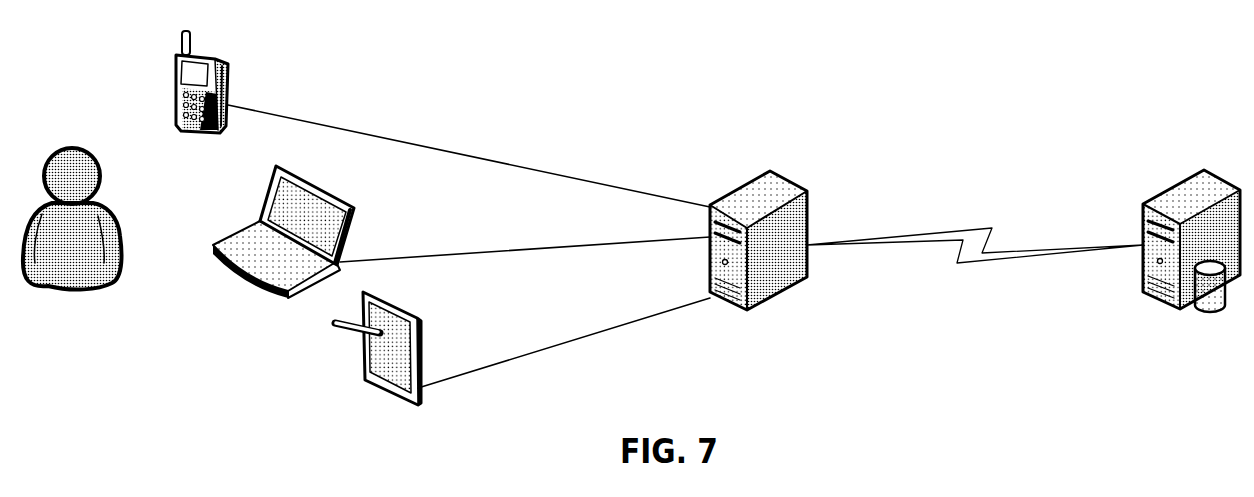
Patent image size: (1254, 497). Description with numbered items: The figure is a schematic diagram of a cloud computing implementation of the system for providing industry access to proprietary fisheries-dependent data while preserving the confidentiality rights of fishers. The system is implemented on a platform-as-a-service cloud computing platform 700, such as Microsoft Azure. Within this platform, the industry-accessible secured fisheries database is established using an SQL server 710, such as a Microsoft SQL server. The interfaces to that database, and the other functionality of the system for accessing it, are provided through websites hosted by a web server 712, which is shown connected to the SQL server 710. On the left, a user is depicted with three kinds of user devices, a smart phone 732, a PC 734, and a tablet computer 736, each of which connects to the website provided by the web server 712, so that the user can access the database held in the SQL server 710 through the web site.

The cloud computing platform 700 is at (598, 58).
The SQL server 710 is at (1178, 183).
The web server 712 is at (749, 180).
The smart phone 732 is at (229, 69).
The PC 734 is at (355, 207).
The tablet computer 736 is at (418, 320).